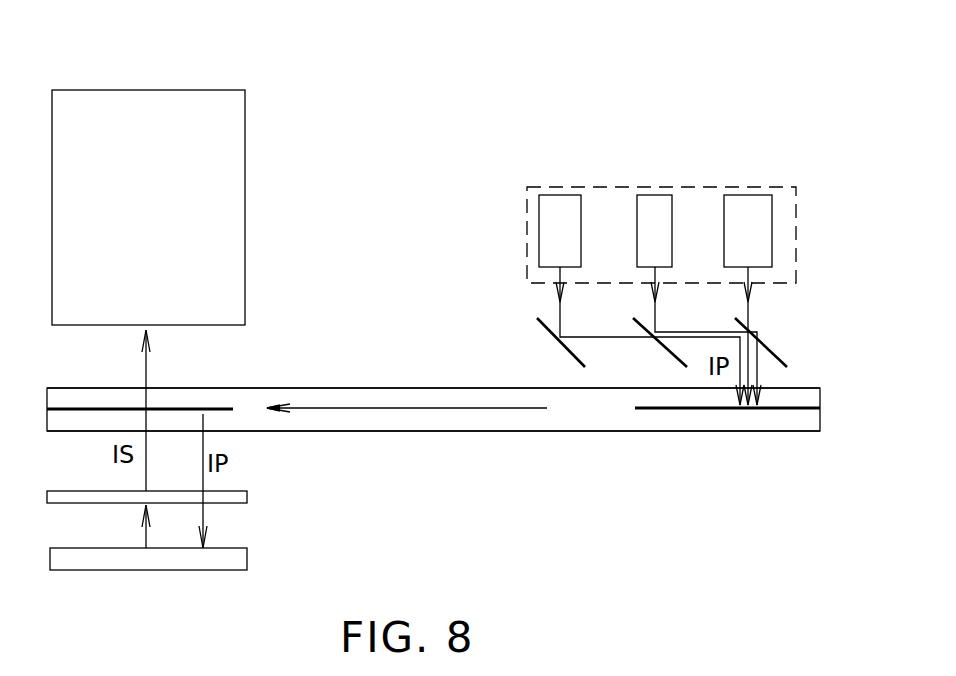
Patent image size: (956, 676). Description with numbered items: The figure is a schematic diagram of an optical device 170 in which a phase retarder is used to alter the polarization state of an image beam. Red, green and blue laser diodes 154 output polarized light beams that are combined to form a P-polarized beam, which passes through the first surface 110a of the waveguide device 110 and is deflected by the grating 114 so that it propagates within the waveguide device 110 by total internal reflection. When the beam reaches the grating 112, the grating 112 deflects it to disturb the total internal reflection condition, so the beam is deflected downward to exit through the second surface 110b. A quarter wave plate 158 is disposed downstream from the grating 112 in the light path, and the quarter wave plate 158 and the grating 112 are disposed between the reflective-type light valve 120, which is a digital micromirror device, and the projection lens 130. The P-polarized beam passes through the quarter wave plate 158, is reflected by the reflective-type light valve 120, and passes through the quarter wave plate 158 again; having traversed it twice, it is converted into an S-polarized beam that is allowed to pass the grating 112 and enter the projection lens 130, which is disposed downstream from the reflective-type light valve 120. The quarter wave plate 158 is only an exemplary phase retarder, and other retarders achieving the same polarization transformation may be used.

The optical device 170 is at (638, 41).
The projection lens 130 is at (248, 165).
The waveguide device 110 is at (332, 385).
The first surface 110a is at (418, 388).
The second surface 110b is at (463, 431).
The grating 112 is at (188, 409).
The grating 114 is at (658, 408).
The quarter wave plate 158 is at (247, 497).
The reflective-type light valve 120 is at (248, 557).
The laser diodes 154 is at (662, 185).